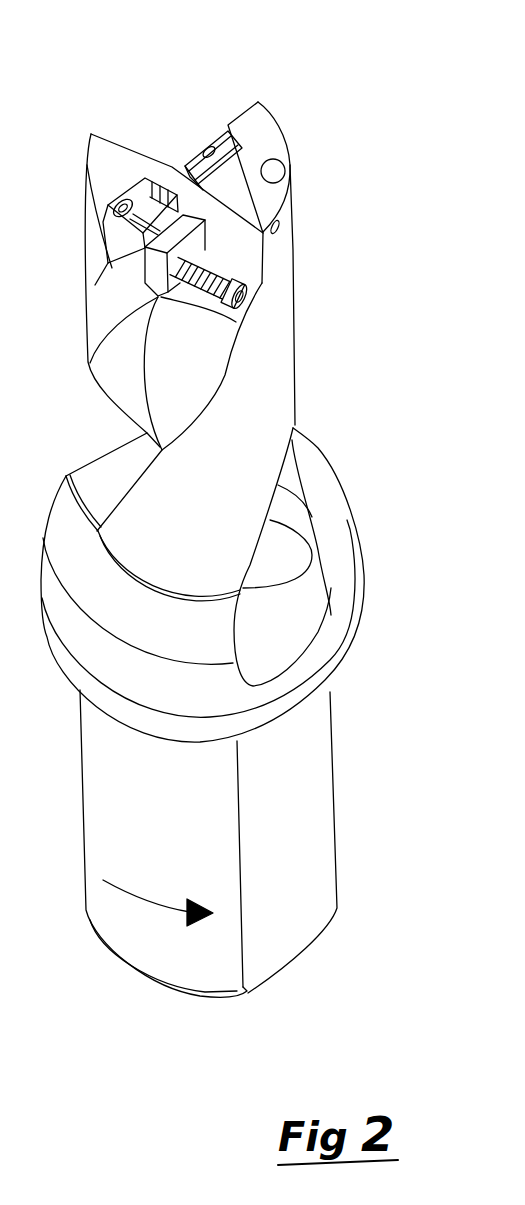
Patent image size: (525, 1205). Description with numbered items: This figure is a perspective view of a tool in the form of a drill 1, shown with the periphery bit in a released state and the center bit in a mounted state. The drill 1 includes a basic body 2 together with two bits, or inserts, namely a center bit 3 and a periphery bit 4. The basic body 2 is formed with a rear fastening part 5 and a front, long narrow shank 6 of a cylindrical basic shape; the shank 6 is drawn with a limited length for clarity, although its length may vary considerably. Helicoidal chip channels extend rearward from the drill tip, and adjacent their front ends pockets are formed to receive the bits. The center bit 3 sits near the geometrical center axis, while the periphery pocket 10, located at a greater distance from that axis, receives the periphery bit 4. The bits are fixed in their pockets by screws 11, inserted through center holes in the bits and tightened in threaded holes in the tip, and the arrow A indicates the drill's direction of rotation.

The drill 1 is at (359, 96).
The basic body 2 is at (42, 518).
The center bit 3 is at (197, 85).
The periphery bit 4 is at (165, 299).
The rear fastening part 5 is at (97, 789).
The shank 6 is at (299, 356).
The periphery pocket 10 is at (110, 248).
The screw 11 is at (208, 297).